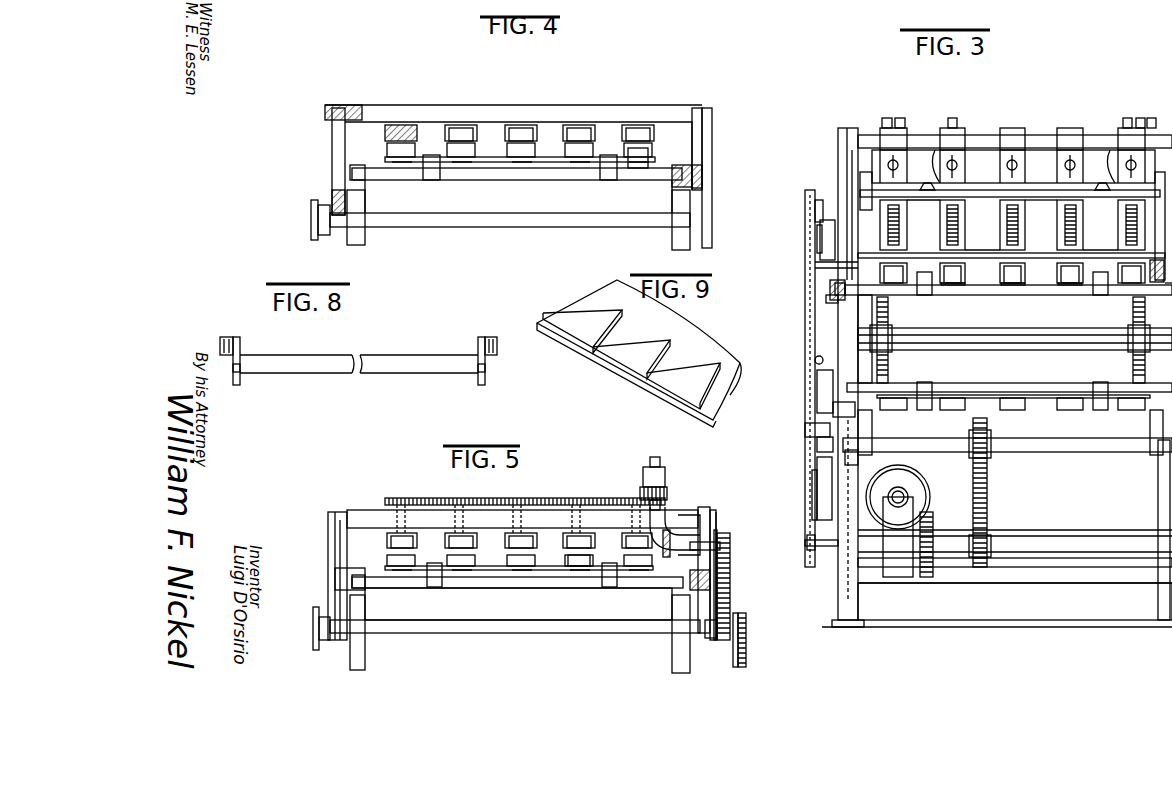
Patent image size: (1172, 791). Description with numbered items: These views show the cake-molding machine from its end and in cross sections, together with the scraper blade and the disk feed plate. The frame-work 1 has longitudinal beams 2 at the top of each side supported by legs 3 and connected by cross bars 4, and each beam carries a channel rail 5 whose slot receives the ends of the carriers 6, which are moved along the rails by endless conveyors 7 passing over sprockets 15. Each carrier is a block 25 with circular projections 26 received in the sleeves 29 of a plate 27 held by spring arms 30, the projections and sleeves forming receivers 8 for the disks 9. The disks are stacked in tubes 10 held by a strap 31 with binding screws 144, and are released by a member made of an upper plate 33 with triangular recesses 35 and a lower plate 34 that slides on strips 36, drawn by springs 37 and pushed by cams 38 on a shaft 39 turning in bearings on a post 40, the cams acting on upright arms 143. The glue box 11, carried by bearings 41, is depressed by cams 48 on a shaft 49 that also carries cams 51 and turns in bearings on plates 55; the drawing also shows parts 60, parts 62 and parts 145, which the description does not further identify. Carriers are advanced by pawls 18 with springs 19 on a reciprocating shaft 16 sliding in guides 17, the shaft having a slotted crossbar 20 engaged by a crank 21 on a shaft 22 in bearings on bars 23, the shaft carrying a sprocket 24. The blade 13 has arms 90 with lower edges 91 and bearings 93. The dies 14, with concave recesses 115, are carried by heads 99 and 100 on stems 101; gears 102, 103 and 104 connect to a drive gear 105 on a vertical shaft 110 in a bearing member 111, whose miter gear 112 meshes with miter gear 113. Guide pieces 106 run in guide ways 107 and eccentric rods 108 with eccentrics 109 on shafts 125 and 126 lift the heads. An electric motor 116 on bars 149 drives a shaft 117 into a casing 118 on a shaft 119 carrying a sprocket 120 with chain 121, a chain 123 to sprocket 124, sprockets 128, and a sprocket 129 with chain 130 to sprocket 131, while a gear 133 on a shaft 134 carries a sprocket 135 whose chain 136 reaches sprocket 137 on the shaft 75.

In FIG. 3, the frame-work 1 is at (836, 598).
In FIG. 3, the longitudinal beams 2 is at (1160, 305).
In FIG. 4, the legs 3 is at (366, 238).
In FIG. 5, the legs 3 is at (365, 652).
In FIG. 3, the cross bars 4 is at (1095, 585).
In FIG. 4, the rail 5 is at (355, 166).
In FIG. 5, the rail 5 is at (366, 592).
In FIG. 3, the rail 5 is at (836, 292).
In FIG. 4, the carriers 6 is at (383, 177).
In FIG. 5, the carriers 6 is at (493, 588).
In FIG. 3, the carriers 6 is at (1128, 395).
In FIG. 3, the conveyor 7 is at (1130, 312).
In FIG. 4, the receivers 8 is at (475, 152).
In FIG. 5, the receivers 8 is at (530, 555).
In FIG. 3, the receivers 8 is at (1012, 270).
In FIG. 3, the disks 9 is at (959, 228).
In FIG. 3, the tubes 10 is at (955, 135).
In FIG. 3, the glue box 11 is at (923, 209).
In FIG. 8, the vertical blade 13 is at (400, 368).
In FIG. 4, the dies 14 is at (420, 133).
In FIG. 5, the dies 14 is at (446, 542).
In FIG. 3, the sprockets 15 is at (889, 310).
In FIG. 3, the reciprocating shaft 16 is at (817, 447).
In FIG. 3, the guides 17 is at (805, 430).
In FIG. 3, the pawls 18 is at (872, 428).
In FIG. 3, the springs 19 is at (860, 456).
In FIG. 3, the slotted crossbar 20 is at (812, 492).
In FIG. 3, the crank 21 is at (817, 395).
In FIG. 3, the shaft 22 is at (1046, 452).
In FIG. 3, the bars 23 is at (833, 410).
In FIG. 3, the gear 24 is at (987, 432).
In FIG. 4, the block 25 is at (494, 176).
In FIG. 5, the block 25 is at (415, 588).
In FIG. 3, the block 25 is at (1035, 294).
In FIG. 4, the projections 26 is at (640, 168).
In FIG. 5, the projections 26 is at (585, 585).
In FIG. 3, the projections 26 is at (962, 285).
In FIG. 4, the plate 27 is at (555, 163).
In FIG. 5, the plate 27 is at (386, 568).
In FIG. 3, the plate 27 is at (995, 390).
In FIG. 4, the sleeves 29 is at (568, 150).
In FIG. 5, the sleeves 29 is at (390, 560).
In FIG. 3, the sleeves 29 is at (1072, 285).
In FIG. 4, the spring arms 30 is at (607, 170).
In FIG. 5, the spring arms 30 is at (440, 586).
In FIG. 3, the spring arms 30 is at (1100, 294).
In FIG. 3, the strap 31 is at (1013, 166).
In FIG. 9, the plate 33 is at (631, 359).
In FIG. 3, the plate 33 is at (1032, 252).
In FIG. 9, the plate 34 is at (572, 346).
In FIG. 3, the plate 34 is at (1010, 275).
In FIG. 9, the recesses 35 is at (660, 353).
In FIG. 3, the longitudinal strips 36 is at (815, 261).
In FIG. 3, the springs 37 is at (815, 268).
In FIG. 3, the cams 38 is at (860, 178).
In FIG. 3, the shaft 39 is at (1041, 209).
In FIG. 3, the post 40 is at (851, 204).
In FIG. 3, the bearings 41 is at (851, 215).
In FIG. 3, the cams 48 is at (886, 118).
In FIG. 3, the shaft 49 is at (1042, 135).
In FIG. 3, the cams 51 is at (953, 118).
In FIG. 3, the plates 55 is at (862, 186).
In FIG. 3, the wedge 60 is at (927, 183).
In FIG. 3, the spring 62 is at (936, 148).
In FIG. 3, the shaft 75 is at (826, 210).
In FIG. 8, the arms 90 is at (233, 368).
In FIG. 8, the edges 91 is at (234, 382).
In FIG. 8, the bearings 93 is at (230, 338).
In FIG. 5, the head 99 is at (378, 510).
In FIG. 4, the head 100 is at (612, 112).
In FIG. 4, the stem 101 is at (518, 124).
In FIG. 5, the stem 101 is at (404, 520).
In FIG. 5, the gears 102 is at (405, 493).
In FIG. 5, the gear 103 is at (662, 504).
In FIG. 5, the gear 104 is at (667, 476).
In FIG. 5, the drive gear 105 is at (668, 492).
In FIG. 4, the guide pieces 106 is at (340, 148).
In FIG. 5, the guide pieces 106 is at (340, 514).
In FIG. 3, the guide pieces 106 is at (822, 230).
In FIG. 4, the guide ways 107 is at (333, 178).
In FIG. 5, the guide ways 107 is at (336, 582).
In FIG. 3, the guide ways 107 is at (837, 299).
In FIG. 4, the eccentric rods 108 is at (330, 125).
In FIG. 5, the eccentric rods 108 is at (330, 547).
In FIG. 3, the eccentric rods 108 is at (818, 240).
In FIG. 4, the eccentrics 109 is at (318, 215).
In FIG. 5, the vertical shaft 110 is at (662, 462).
In FIG. 5, the bearing member 111 is at (718, 518).
In FIG. 5, the miter gear 112 is at (640, 536).
In FIG. 5, the miter gear 113 is at (667, 565).
In FIG. 4, the concave recesses 115 is at (398, 124).
In FIG. 3, the electric motor 116 is at (920, 490).
In FIG. 3, the shaft 117 is at (905, 498).
In FIG. 3, the casing 118 is at (898, 537).
In FIG. 3, the shaft 119 is at (1050, 530).
In FIG. 3, the sprocket 120 is at (990, 575).
In FIG. 3, the chain 121 is at (988, 505).
In FIG. 5, the chain 123 is at (746, 655).
In FIG. 5, the sprocket 124 is at (738, 618).
In FIG. 5, the shaft 125 is at (492, 632).
In FIG. 4, the shaft 126 is at (533, 226).
In FIG. 4, the sprockets 128 is at (312, 238).
In FIG. 5, the sprockets 128 is at (315, 645).
In FIG. 3, the sprockets 128 is at (818, 362).
In FIG. 5, the sprocket 129 is at (712, 640).
In FIG. 5, the chain 130 is at (731, 596).
In FIG. 5, the sprocket 131 is at (719, 532).
In FIG. 3, the gear 133 is at (926, 578).
In FIG. 3, the shaft 134 is at (822, 548).
In FIG. 3, the sprocket 135 is at (808, 550).
In FIG. 3, the chain 136 is at (817, 478).
In FIG. 3, the sprocket 137 is at (805, 196).
In FIG. 3, the upright arms 143 is at (900, 225).
In FIG. 3, the binding screws 144 is at (1018, 165).
In FIG. 3, the bearing 145 is at (830, 285).
In FIG. 3, the bars 149 is at (1108, 528).